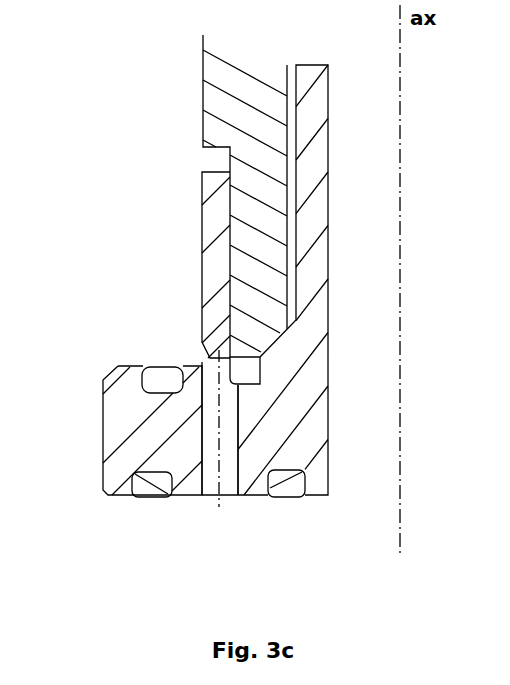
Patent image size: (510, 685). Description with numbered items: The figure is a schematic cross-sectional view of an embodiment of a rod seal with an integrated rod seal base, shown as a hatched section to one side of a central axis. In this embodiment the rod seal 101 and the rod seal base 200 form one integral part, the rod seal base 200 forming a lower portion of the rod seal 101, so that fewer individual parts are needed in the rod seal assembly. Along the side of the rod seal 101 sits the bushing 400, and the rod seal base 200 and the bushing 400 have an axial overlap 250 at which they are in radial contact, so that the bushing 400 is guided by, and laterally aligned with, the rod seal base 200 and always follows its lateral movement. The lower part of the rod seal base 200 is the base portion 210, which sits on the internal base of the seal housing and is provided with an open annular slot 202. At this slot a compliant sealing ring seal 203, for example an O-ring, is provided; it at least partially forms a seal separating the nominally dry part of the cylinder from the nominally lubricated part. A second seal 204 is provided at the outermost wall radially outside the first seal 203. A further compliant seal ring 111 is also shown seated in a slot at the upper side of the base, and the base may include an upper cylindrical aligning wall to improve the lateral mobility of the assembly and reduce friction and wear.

The rod seal 101 is at (310, 165).
The bushing 400 is at (255, 232).
The axial overlap 250 is at (170, 281).
The compliant seal ring 111 is at (158, 365).
The rod seal base 200 is at (132, 407).
The base portion 210 is at (79, 496).
The second seal 204 is at (144, 493).
The annular slot 202 is at (258, 494).
The sealing ring seal 203 is at (290, 483).